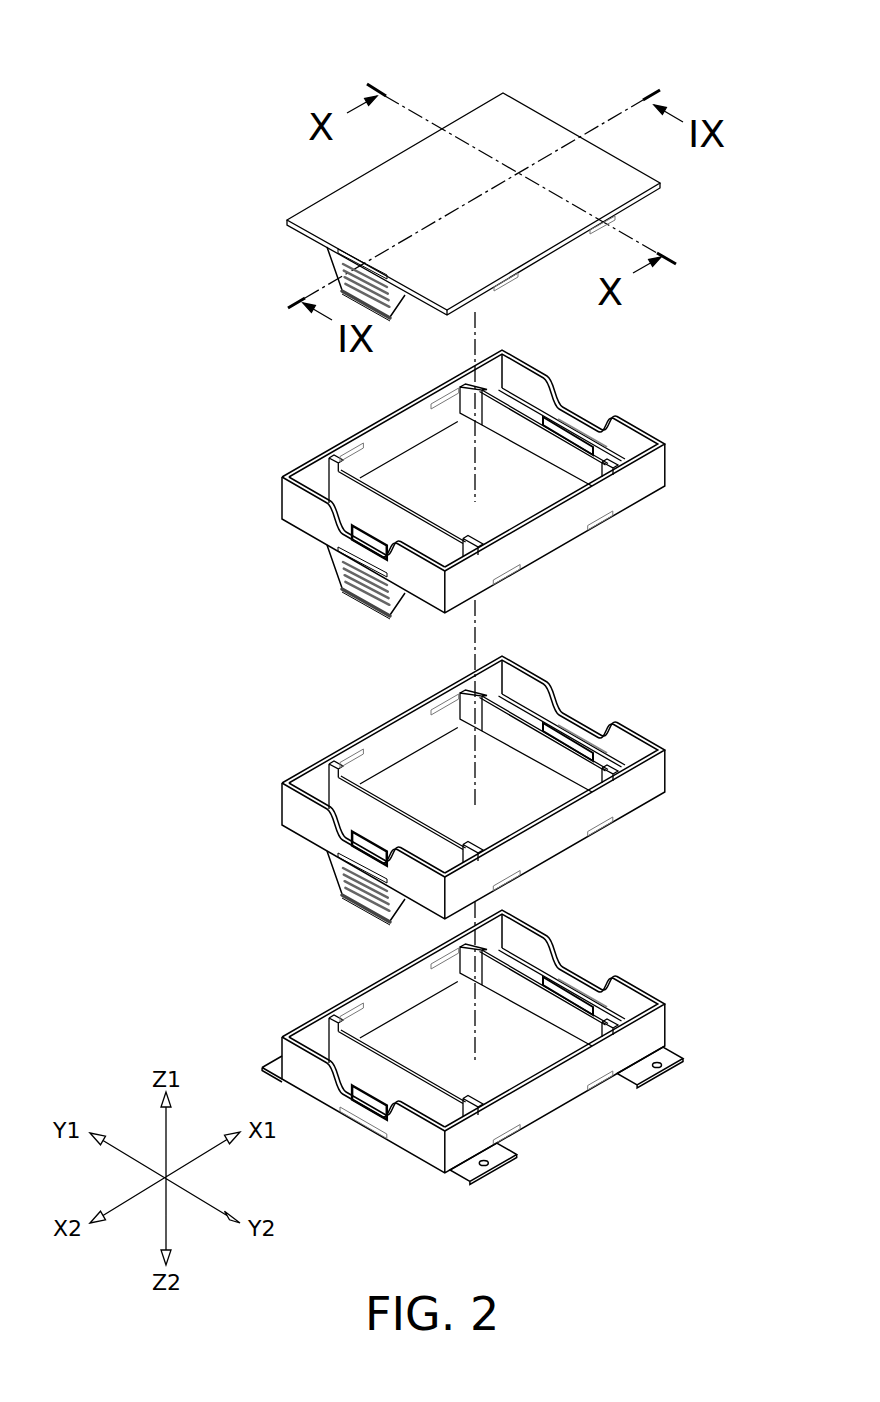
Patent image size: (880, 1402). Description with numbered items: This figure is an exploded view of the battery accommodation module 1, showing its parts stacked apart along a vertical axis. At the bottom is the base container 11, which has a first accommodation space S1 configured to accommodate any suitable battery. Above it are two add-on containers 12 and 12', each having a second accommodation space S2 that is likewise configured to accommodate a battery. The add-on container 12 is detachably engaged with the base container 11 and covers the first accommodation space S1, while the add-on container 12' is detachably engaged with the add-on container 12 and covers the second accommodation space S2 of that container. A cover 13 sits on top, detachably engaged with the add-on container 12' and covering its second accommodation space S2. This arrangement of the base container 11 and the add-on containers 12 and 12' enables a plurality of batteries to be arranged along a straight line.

The battery accommodation module 1 is at (771, 26).
The base container 11 is at (661, 987).
The add-on container 12 is at (518, 790).
The add-on container 12' is at (521, 484).
The cover 13 is at (543, 100).
The first accommodation space S1 is at (555, 1007).
The second accommodation space S2 is at (555, 447).